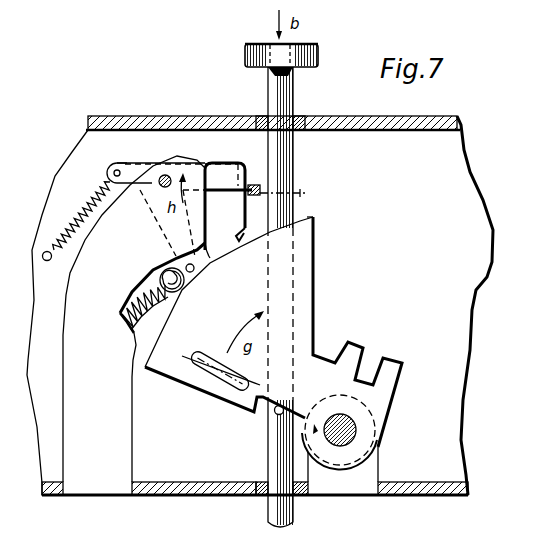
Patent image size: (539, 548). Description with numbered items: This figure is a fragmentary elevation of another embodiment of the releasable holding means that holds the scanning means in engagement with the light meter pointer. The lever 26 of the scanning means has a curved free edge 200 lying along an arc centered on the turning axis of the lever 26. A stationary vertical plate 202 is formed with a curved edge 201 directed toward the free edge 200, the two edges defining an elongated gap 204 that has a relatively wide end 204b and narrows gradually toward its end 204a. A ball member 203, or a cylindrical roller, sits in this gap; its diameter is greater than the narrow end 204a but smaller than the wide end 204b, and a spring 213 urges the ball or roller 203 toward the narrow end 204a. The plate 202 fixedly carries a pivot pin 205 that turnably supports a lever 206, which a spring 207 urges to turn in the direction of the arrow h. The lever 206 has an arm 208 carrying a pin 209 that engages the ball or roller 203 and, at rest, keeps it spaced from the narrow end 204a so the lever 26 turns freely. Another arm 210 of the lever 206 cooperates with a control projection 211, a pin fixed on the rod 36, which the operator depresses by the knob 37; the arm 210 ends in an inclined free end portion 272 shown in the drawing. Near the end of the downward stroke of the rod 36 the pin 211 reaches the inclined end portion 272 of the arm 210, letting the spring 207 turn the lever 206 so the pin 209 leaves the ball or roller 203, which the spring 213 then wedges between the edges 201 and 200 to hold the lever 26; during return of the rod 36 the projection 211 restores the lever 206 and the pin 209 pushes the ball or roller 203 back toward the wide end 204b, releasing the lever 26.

The lever 26 is at (305, 313).
The rod 36 is at (283, 452).
The knob 37 is at (305, 66).
The curved free edge 200 is at (213, 264).
The curved edge 201 is at (147, 279).
The stationary vertical plate 202 is at (73, 347).
The ball member 203 is at (228, 356).
The elongated gap 204 is at (167, 291).
The narrow end 204a is at (203, 257).
The wide end 204b is at (146, 320).
The pivot pin 205 is at (164, 176).
The lever 206 is at (226, 163).
The spring 207 is at (93, 194).
The arm 208 is at (174, 229).
The pin 209 is at (192, 272).
The arm 210 is at (262, 212).
The control projection 211 is at (266, 180).
The spring 213 is at (129, 304).
The hook 272 is at (239, 240).